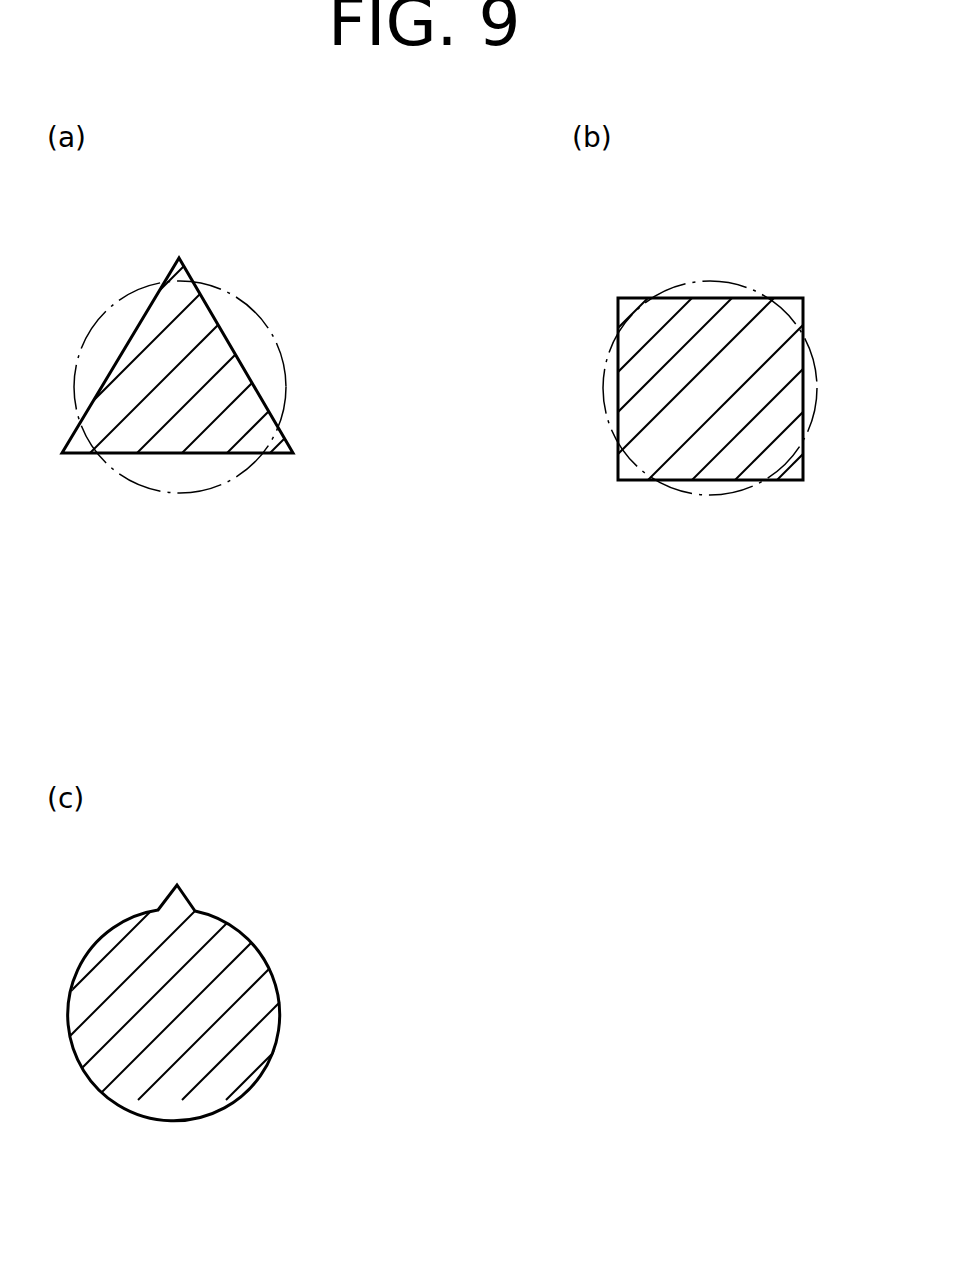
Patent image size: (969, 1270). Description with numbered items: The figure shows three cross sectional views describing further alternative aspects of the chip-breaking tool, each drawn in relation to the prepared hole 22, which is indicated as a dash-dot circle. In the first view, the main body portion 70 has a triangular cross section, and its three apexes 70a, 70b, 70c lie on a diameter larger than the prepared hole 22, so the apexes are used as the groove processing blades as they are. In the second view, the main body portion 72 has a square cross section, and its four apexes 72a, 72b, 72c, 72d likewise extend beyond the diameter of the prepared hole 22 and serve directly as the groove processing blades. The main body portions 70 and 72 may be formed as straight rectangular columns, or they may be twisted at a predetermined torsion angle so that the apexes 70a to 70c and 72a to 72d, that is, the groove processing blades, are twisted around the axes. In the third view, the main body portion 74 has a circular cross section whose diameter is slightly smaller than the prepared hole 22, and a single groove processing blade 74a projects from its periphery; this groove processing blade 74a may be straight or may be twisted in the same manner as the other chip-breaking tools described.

The prepared hole 22 is at (267, 323).
The main body portion 70 is at (175, 442).
The apex 70a is at (179, 258).
The apex 70b is at (62, 453).
The apex 70c is at (293, 453).
The main body portion 72 is at (703, 440).
The apex 72a is at (618, 298).
The apex 72b is at (803, 298).
The apex 72c is at (618, 480).
The apex 72d is at (803, 480).
The main body portion 74 is at (158, 1098).
The groove processing blade 74a is at (175, 903).